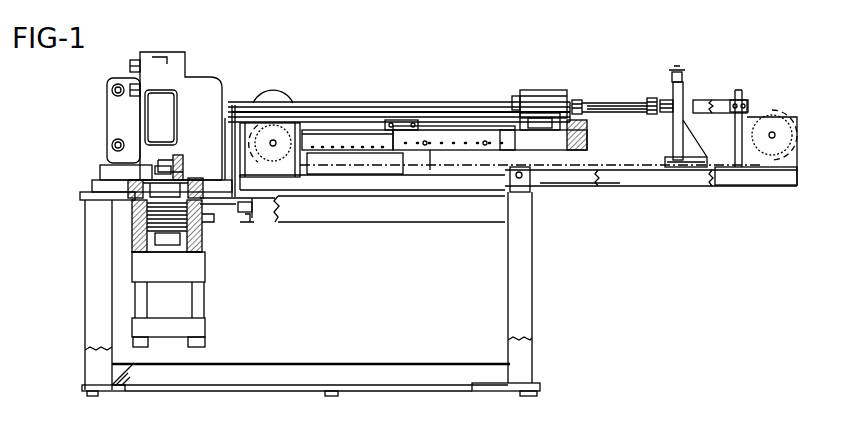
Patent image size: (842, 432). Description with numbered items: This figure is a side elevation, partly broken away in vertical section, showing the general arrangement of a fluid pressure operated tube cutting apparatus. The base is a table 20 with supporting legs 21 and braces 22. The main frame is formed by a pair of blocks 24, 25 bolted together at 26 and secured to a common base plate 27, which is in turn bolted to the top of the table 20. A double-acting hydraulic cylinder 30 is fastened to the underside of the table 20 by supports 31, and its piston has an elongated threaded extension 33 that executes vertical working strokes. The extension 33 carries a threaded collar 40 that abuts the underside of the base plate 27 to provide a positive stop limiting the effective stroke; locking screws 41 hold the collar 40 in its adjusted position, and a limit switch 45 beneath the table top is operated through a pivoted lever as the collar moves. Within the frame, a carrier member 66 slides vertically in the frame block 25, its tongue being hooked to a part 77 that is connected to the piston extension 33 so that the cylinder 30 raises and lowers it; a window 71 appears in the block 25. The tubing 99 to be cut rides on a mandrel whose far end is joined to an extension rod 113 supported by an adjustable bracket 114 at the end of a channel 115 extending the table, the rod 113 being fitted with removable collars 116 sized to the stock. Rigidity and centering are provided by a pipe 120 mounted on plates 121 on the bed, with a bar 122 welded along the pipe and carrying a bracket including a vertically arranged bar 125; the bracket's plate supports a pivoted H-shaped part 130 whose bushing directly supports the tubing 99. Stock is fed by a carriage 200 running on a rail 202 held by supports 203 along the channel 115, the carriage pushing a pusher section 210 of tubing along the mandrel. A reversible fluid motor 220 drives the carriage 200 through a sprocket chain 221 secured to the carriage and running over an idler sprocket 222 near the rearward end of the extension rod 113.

The table 20 is at (391, 237).
The supporting legs 21 is at (88, 357).
The braces 22 is at (292, 382).
The block 24 is at (140, 113).
The block 25 is at (198, 82).
The bolts 26 is at (132, 85).
The base plate 27 is at (108, 172).
The double-acting hydraulic cylinder 30 is at (223, 279).
The supports 31 is at (202, 312).
The threaded extension 33 is at (148, 230).
The threaded collar 40 is at (125, 208).
The locking screws 41 is at (206, 222).
The limit switch 45 is at (252, 218).
The carrier member 66 is at (180, 160).
The window 71 is at (168, 113).
The part 77 is at (160, 170).
The tubing 99 is at (345, 110).
The extension rod 113 is at (607, 100).
The bracket 114 is at (681, 96).
The channel 115 is at (606, 187).
The removable collars 116 is at (576, 98).
The pipe 120 is at (590, 138).
The plates 121 is at (327, 172).
The bar 122 is at (356, 140).
The vertically arranged bar 125 is at (483, 130).
The H-shaped part 130 is at (407, 120).
The carriage 200 is at (545, 78).
The rail 202 is at (720, 100).
The supports 203 is at (742, 93).
The pusher section 210 is at (470, 102).
The reversible fluid motor 220 is at (276, 98).
The sprocket chain 221 is at (432, 172).
The idler sprocket 222 is at (768, 150).